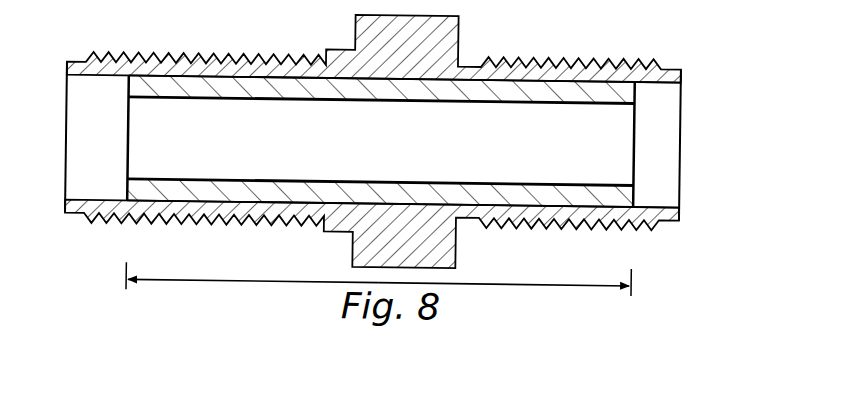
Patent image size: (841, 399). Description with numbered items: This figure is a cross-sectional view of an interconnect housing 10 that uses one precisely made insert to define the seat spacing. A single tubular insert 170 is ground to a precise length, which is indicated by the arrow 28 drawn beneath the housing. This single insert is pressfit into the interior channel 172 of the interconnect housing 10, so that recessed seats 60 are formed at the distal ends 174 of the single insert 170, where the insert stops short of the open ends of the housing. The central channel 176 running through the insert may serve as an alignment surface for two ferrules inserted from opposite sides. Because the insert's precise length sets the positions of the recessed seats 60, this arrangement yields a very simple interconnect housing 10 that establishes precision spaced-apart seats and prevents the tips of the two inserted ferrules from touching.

The interconnect housing 10 is at (376, 137).
The arrow 28 is at (518, 277).
The recessed seats 60 is at (110, 139).
The single tubular insert 170 is at (613, 80).
The interior channel 172 is at (665, 128).
The distal ends 174 is at (127, 110).
The central channel 176 is at (418, 150).